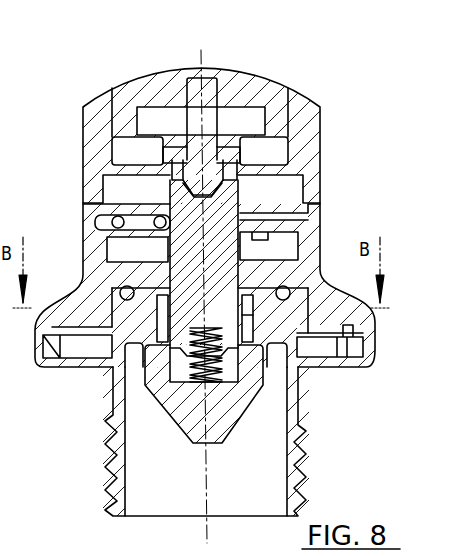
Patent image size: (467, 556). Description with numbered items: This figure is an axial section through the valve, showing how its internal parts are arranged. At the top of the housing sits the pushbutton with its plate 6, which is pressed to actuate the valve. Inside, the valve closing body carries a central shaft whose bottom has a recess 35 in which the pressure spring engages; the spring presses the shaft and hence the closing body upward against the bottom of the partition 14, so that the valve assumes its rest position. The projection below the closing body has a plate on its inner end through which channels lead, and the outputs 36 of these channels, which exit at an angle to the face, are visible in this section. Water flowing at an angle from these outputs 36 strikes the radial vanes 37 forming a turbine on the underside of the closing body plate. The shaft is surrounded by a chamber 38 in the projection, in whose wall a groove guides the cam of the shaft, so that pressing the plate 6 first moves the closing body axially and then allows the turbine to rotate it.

The plate 6 is at (231, 106).
The partition 14 is at (307, 212).
The radial vanes 37 is at (288, 244).
The outputs of the channels 36 is at (285, 293).
The chamber 38 is at (160, 345).
The recess 35 is at (190, 352).